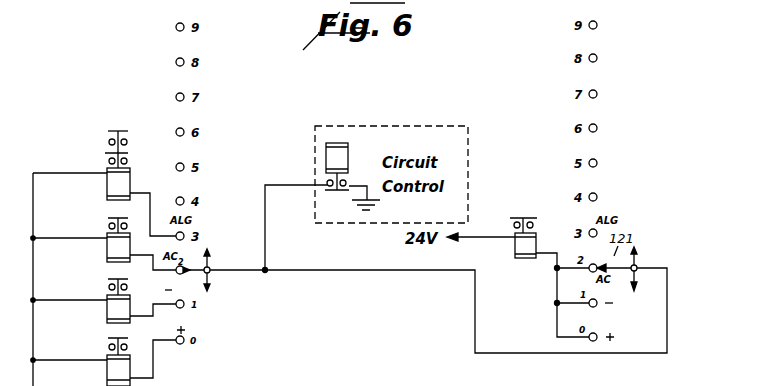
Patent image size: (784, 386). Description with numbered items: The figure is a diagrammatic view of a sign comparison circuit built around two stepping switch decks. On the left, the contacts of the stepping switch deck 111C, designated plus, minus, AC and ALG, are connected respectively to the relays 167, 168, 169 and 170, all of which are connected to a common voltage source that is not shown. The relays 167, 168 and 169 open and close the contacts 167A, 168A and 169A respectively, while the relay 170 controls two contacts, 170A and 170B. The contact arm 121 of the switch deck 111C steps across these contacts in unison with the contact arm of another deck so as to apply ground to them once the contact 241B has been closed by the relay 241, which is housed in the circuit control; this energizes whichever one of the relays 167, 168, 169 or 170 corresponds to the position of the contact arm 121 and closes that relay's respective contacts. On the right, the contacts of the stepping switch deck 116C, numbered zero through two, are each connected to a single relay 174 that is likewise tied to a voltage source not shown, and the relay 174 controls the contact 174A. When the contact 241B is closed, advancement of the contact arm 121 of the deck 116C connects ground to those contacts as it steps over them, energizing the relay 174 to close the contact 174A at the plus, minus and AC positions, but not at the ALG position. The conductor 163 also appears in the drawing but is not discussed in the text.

The relay 167 is at (107, 375).
The contact 167A is at (110, 346).
The relay 168 is at (107, 312).
The contact 168A is at (110, 286).
The relay 169 is at (107, 250).
The contact 169A is at (110, 225).
The relay 170 is at (107, 185).
The contact 170A is at (112, 158).
The contact 170B is at (116, 131).
The stepping switch deck 111C is at (211, 265).
The stepping switch deck 116C is at (638, 265).
The contact arm 121 is at (196, 280).
The conductor 163 is at (228, 385).
The relay 174 is at (515, 255).
The contact 174A is at (540, 205).
The relay 241 is at (340, 147).
The contact 241B is at (328, 190).